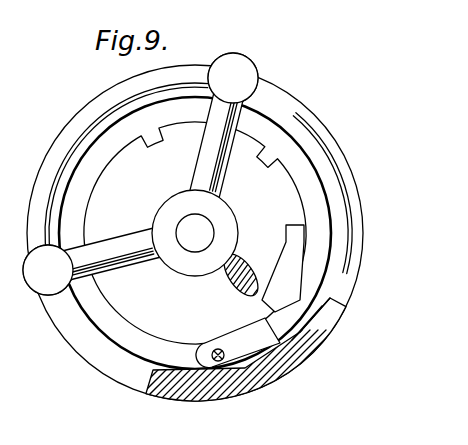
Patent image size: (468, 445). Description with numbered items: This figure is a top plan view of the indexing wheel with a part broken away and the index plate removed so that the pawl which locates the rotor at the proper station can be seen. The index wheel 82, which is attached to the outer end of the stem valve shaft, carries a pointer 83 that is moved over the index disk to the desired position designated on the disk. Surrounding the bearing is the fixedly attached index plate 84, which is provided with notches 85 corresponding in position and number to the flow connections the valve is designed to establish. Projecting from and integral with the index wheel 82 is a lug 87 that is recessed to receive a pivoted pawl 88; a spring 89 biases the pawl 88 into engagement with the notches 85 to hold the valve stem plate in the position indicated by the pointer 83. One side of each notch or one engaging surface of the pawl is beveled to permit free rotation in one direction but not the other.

The index wheel 82 is at (318, 138).
The pointer 83 is at (163, 203).
The index plate 84 is at (284, 259).
The notches 85 is at (266, 300).
The lug 87 is at (318, 305).
The pawl 88 is at (206, 342).
The spring 89 is at (258, 370).